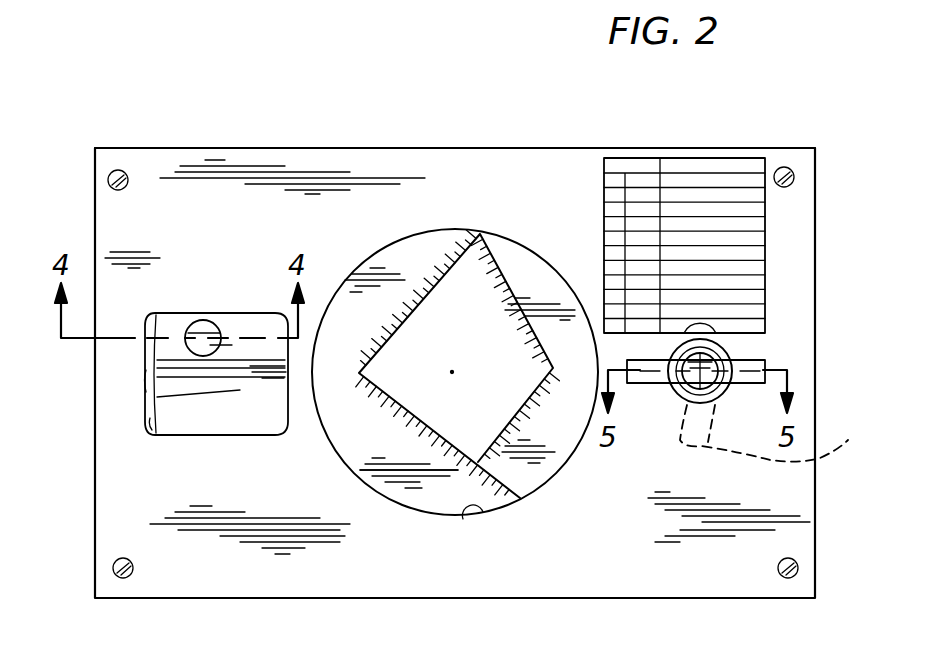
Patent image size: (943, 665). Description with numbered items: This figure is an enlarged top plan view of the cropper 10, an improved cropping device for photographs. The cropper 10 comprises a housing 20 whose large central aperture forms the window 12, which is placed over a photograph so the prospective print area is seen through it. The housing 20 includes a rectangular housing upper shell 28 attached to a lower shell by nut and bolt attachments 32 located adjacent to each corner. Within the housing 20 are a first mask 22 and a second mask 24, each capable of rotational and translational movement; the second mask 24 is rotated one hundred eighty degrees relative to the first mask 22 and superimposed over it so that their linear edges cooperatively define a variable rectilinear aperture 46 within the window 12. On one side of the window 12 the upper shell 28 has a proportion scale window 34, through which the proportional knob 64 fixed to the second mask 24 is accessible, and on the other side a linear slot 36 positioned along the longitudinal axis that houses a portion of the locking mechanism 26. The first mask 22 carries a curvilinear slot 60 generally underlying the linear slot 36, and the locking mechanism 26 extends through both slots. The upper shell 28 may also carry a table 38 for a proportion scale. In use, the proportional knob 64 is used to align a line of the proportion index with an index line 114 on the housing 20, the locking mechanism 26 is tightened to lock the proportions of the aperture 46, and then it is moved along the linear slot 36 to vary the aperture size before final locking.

The cropper 10 is at (383, 148).
The window 12 is at (463, 520).
The housing 20 is at (578, 148).
The first mask 22 is at (495, 262).
The second mask 24 is at (365, 464).
The locking mechanism 26 is at (733, 354).
The housing upper shell 28 is at (233, 166).
The nut and bolt attachments 32 is at (108, 177).
The proportion scale window 34 is at (146, 426).
The linear slot 36 is at (757, 364).
The table for a proportion scale 38 is at (672, 158).
The rectilinear aperture 46 is at (458, 364).
The curvilinear slot 60 is at (774, 433).
The proportional knob 64 is at (211, 322).
The index line 114 is at (145, 374).